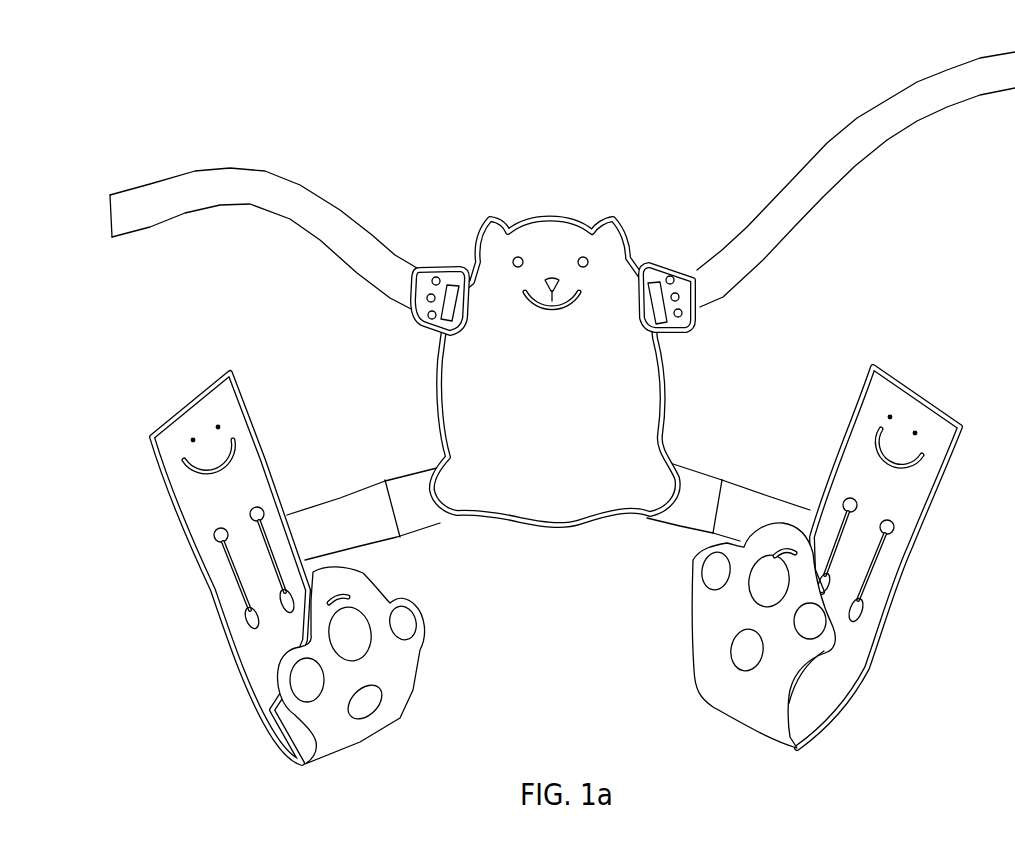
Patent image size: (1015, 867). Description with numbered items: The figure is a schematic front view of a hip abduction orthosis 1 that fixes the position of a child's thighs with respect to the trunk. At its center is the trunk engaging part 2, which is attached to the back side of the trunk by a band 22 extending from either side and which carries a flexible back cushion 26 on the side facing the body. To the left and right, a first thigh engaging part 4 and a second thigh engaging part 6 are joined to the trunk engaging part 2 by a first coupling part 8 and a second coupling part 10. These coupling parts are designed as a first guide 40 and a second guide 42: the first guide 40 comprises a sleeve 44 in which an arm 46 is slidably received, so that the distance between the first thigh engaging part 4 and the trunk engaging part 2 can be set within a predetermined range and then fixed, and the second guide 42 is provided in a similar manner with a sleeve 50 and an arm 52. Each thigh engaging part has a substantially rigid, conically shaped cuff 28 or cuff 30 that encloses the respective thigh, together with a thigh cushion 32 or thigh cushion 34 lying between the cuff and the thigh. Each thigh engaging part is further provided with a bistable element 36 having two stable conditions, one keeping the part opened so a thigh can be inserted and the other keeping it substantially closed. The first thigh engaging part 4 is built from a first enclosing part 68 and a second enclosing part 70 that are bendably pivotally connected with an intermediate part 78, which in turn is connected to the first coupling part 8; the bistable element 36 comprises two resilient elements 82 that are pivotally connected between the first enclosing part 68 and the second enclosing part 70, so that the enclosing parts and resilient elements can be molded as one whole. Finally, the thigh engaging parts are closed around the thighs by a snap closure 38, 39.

The hip abduction orthosis 1 is at (548, 417).
The trunk engaging part 2 is at (555, 395).
The first thigh engaging part 4 is at (383, 675).
The second thigh engaging part 6 is at (730, 716).
The first coupling part 8 is at (395, 548).
The second coupling part 10 is at (708, 548).
The band 22 is at (233, 208).
The back cushion 26 is at (653, 270).
The cuff 28 is at (195, 543).
The cuff 30 is at (878, 529).
The thigh cushion 32 is at (195, 550).
The thigh cushion 34 is at (880, 383).
The bistable element 36 is at (533, 537).
The closure 38 is at (360, 643).
The closure 39 is at (230, 450).
The first guide 40 is at (405, 477).
The second guide 42 is at (660, 512).
The sleeve 44 is at (453, 525).
The arm 46 is at (377, 541).
The sleeve 50 is at (641, 519).
The arm 52 is at (736, 541).
The first enclosing part 68 is at (253, 710).
The second enclosing part 70 is at (195, 568).
The intermediate part 78 is at (253, 590).
The resilient element 82 is at (227, 583).